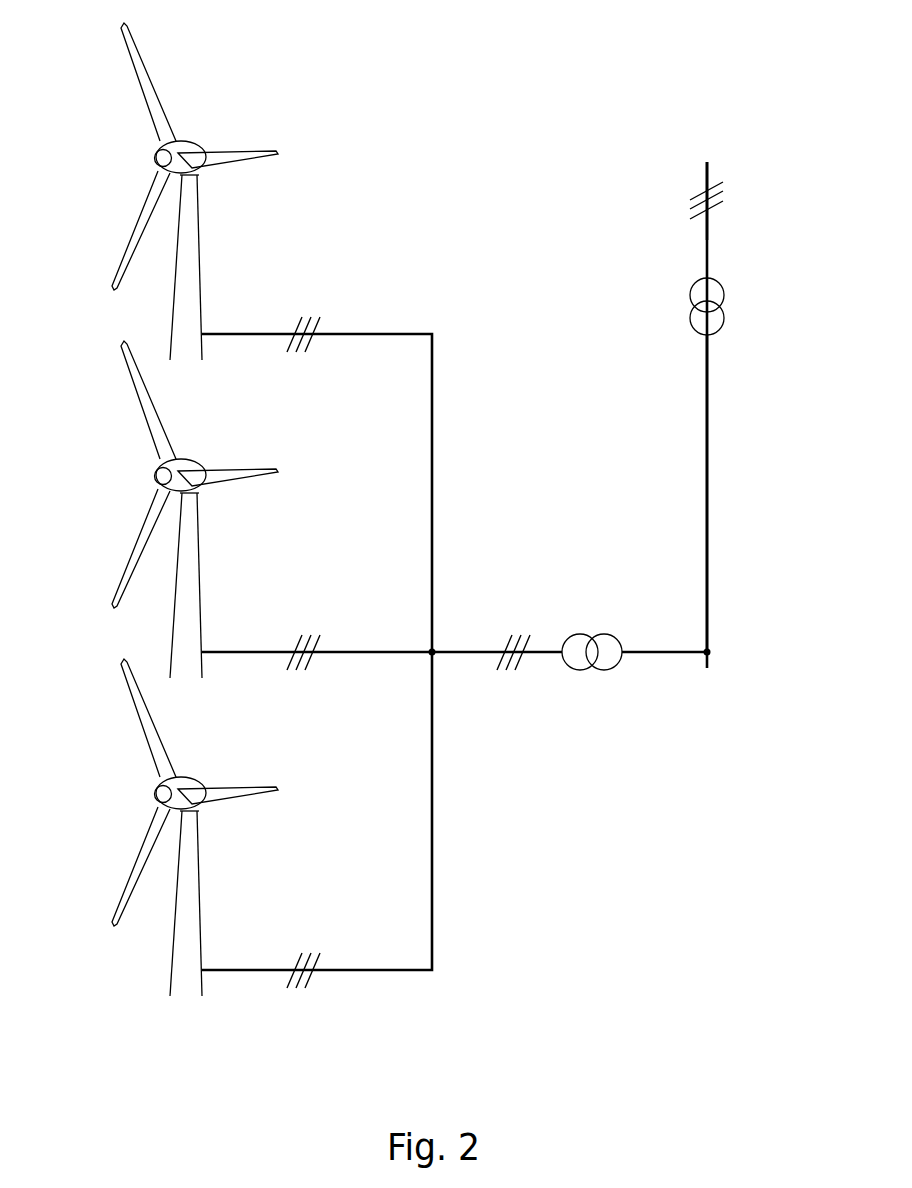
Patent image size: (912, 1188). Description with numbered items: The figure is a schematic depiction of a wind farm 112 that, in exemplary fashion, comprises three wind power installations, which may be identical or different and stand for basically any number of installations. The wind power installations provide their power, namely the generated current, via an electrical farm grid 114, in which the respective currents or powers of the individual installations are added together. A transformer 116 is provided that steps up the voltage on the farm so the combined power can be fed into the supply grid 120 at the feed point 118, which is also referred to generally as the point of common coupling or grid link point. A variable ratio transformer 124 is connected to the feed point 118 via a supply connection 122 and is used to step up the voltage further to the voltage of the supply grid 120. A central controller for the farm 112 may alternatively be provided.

The wind farm 112 is at (507, 160).
The electrical farm grid 114 is at (453, 650).
The transformer 116 is at (593, 634).
The feed point 118 is at (715, 641).
The supply grid 120 is at (709, 238).
The supply connection 122 is at (709, 398).
The variable ratio transformer 124 is at (699, 281).